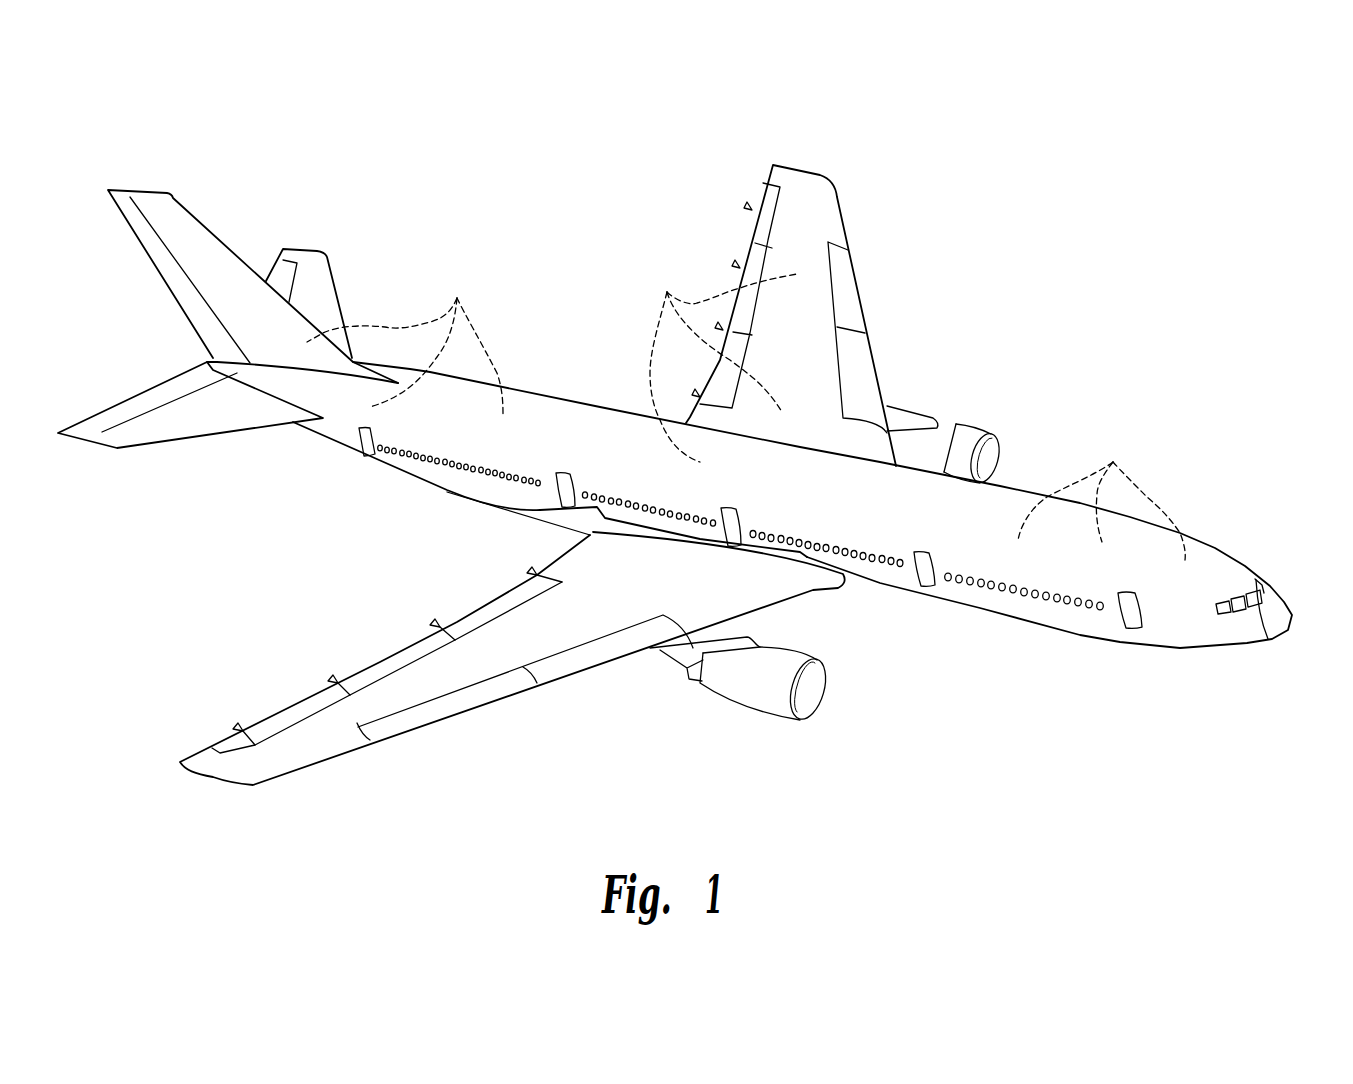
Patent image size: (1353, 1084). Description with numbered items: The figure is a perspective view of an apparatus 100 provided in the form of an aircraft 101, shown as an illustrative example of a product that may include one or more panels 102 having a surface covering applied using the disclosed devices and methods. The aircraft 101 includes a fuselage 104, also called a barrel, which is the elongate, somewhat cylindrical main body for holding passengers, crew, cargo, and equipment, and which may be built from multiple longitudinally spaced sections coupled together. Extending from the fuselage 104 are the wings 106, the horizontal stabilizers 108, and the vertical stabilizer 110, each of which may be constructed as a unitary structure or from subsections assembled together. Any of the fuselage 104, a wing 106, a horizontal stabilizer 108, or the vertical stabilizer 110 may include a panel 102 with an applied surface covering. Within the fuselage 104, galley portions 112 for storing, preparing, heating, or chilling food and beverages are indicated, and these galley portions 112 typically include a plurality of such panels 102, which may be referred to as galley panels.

The apparatus 100 is at (1160, 148).
The aircraft 101 is at (1132, 231).
The panel 102 is at (457, 298).
The fuselage 104 is at (956, 424).
The wing 106 is at (282, 712).
The horizontal stabilizer 108 is at (308, 252).
The vertical stabilizer 110 is at (158, 190).
The galley portion 112 is at (574, 392).